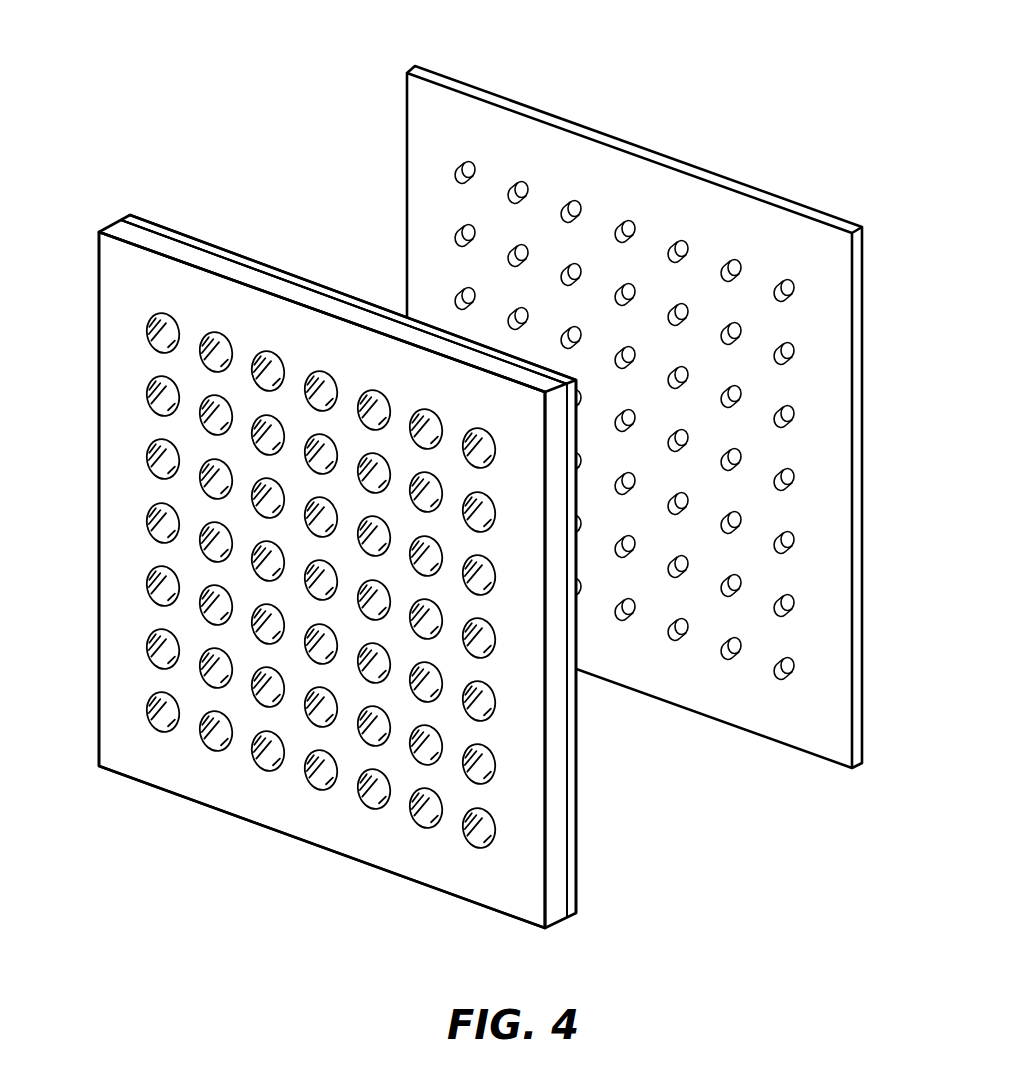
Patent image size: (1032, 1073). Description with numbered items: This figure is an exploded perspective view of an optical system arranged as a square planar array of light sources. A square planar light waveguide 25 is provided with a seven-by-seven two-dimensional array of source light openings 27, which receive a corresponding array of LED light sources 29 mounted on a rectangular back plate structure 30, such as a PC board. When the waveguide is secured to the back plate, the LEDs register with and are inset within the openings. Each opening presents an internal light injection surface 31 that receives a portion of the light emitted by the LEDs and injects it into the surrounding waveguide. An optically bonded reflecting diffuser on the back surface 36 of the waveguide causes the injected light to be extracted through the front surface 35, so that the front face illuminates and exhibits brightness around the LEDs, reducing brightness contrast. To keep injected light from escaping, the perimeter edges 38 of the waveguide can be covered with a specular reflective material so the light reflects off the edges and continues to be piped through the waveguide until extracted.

The light waveguide 25 is at (278, 815).
The source light openings 27 is at (417, 817).
The LED light sources 29 is at (770, 670).
The back plate structure 30 is at (858, 683).
The internal light injection surface 31 is at (160, 596).
The front surface 35 is at (117, 440).
The back surface 36 is at (213, 243).
The perimeter edges 38 is at (145, 238).